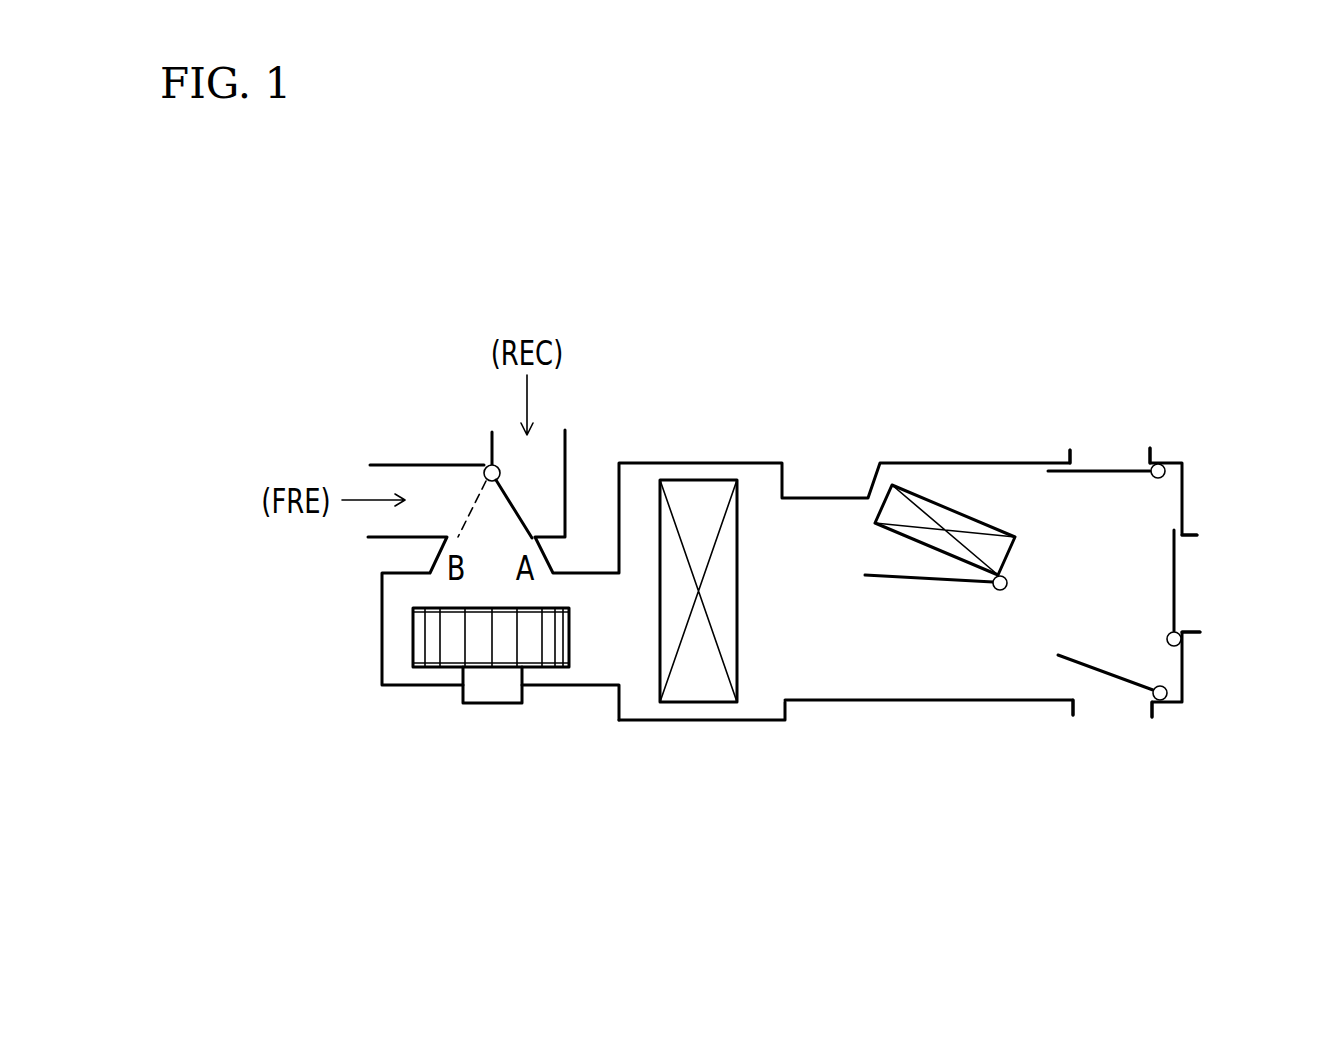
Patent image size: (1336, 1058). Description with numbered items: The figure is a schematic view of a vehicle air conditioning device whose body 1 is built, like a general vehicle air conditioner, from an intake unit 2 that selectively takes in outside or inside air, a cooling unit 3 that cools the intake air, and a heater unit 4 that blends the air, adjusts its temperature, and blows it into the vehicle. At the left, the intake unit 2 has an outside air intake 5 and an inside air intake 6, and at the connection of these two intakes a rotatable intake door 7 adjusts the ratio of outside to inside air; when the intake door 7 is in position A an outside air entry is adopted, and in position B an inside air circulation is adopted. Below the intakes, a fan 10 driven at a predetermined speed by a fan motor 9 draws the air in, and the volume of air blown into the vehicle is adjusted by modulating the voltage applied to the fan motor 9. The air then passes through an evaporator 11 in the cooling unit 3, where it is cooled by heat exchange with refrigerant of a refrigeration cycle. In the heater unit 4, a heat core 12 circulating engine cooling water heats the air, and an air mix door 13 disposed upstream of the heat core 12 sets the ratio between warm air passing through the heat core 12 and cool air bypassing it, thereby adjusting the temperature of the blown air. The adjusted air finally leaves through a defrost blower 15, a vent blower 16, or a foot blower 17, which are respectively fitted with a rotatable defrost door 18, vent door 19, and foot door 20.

The body of air conditioning device 1 is at (818, 461).
The intake unit 2 is at (418, 712).
The cooling unit 3 is at (703, 743).
The heater unit 4 is at (936, 746).
The outside air intake 5 is at (393, 480).
The inside air intake 6 is at (500, 437).
The intake door 7 is at (510, 507).
The fan motor 9 is at (487, 705).
The fan 10 is at (425, 643).
The evaporator 11 is at (702, 492).
The heat core 12 is at (968, 512).
The air mix door 13 is at (922, 585).
The defrost blower 15 is at (1102, 455).
The vent blower 16 is at (1195, 555).
The foot blower 17 is at (1110, 707).
The defrost door 18 is at (1092, 473).
The vent door 19 is at (1177, 600).
The foot door 20 is at (1127, 667).